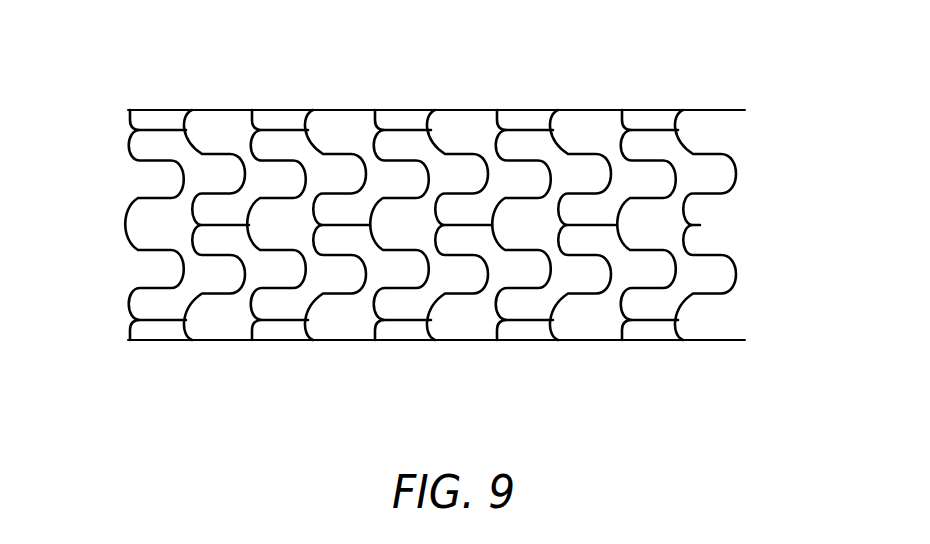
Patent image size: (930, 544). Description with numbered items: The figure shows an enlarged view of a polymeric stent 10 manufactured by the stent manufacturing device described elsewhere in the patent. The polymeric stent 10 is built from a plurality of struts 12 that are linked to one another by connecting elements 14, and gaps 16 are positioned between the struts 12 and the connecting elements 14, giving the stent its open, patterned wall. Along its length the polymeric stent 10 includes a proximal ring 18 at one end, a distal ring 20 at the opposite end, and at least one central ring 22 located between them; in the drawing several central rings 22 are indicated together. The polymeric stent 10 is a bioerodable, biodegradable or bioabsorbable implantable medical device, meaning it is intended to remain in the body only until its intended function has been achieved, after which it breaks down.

The polymeric stent 10 is at (692, 34).
The struts 12 is at (587, 152).
The connecting elements 14 is at (410, 128).
The gaps 16 is at (347, 125).
The proximal ring 18 is at (135, 366).
The distal ring 20 is at (710, 366).
The central ring 22 is at (438, 366).